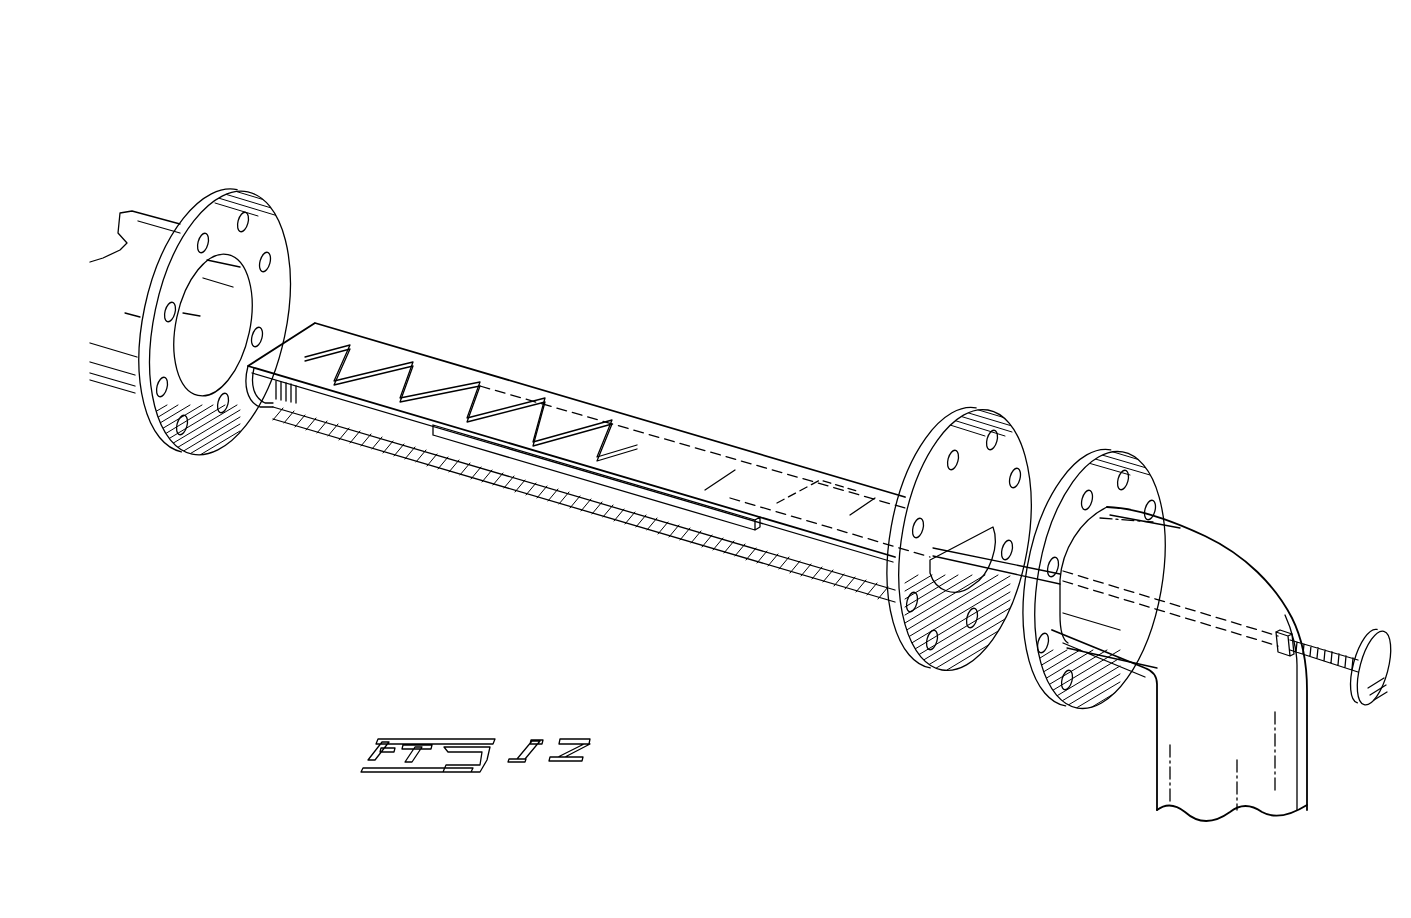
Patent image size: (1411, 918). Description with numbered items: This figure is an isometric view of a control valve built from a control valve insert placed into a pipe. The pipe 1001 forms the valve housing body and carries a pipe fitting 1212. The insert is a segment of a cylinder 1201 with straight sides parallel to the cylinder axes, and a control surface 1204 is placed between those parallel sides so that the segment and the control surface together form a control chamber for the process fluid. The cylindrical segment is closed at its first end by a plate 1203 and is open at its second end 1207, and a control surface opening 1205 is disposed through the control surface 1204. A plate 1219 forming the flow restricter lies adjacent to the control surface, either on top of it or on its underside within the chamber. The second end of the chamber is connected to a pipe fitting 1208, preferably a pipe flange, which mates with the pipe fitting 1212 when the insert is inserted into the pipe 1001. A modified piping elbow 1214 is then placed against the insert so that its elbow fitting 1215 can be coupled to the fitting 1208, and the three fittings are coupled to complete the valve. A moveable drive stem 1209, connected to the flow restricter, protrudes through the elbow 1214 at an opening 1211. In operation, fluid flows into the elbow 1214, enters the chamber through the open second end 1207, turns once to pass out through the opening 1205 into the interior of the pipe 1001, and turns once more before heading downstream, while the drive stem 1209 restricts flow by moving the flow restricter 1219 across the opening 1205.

The pipe 1001 is at (158, 215).
The pipe fitting 1212 is at (288, 224).
The control surface 1204 is at (440, 378).
The control surface opening 1205 is at (355, 358).
The plate 1203 is at (248, 410).
The plate forming the flow restricter 1219 is at (530, 460).
The segment of a cylinder 1201 is at (710, 548).
The pipe fitting 1208 is at (950, 422).
The second end 1207 is at (950, 580).
The elbow fitting 1215 is at (1160, 478).
The modified piping elbow 1214 is at (1155, 768).
The opening 1211 is at (1288, 632).
The moveable drive stem 1209 is at (1323, 667).